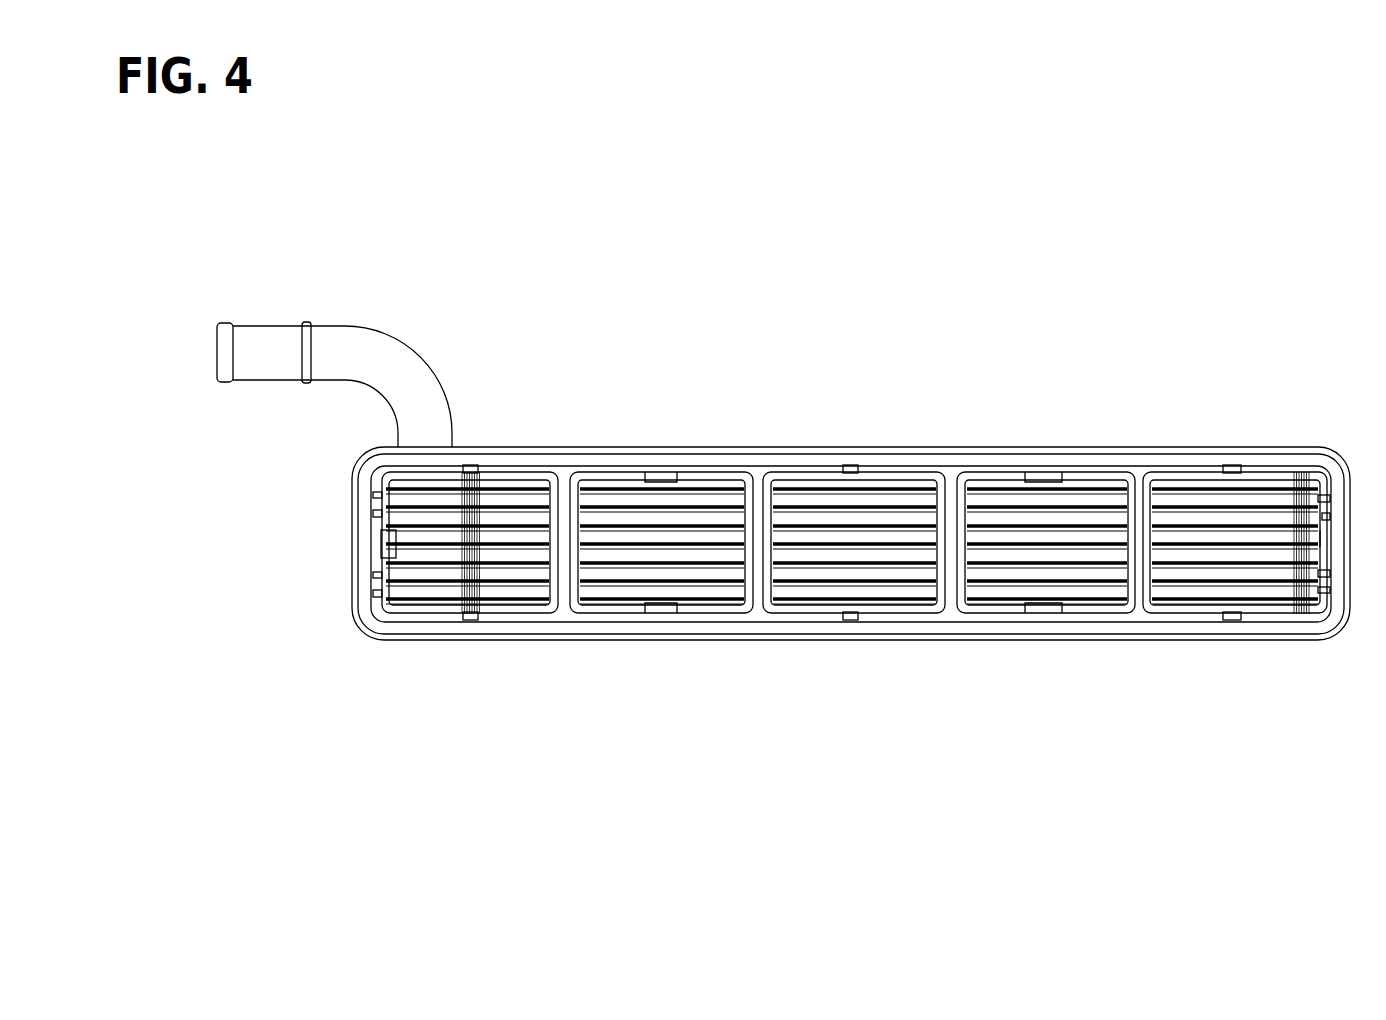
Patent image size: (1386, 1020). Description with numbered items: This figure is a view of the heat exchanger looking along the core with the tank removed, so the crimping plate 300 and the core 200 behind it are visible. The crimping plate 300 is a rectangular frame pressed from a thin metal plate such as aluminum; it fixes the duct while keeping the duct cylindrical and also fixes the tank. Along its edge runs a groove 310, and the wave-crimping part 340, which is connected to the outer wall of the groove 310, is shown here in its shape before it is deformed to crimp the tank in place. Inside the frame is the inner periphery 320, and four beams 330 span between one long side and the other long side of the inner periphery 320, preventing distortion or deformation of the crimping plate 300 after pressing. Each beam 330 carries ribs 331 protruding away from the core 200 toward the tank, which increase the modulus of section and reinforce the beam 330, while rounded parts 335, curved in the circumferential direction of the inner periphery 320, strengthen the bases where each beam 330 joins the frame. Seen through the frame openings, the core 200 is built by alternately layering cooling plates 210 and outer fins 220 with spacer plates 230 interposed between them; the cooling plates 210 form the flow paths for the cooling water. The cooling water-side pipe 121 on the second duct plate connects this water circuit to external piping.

The cooling water-side pipe 121 is at (370, 326).
The core 200 is at (1000, 497).
The cooling plate 210 is at (1080, 492).
The outer fin 220 is at (493, 592).
The spacer plate 230 is at (412, 592).
The crimping plate 300 is at (1193, 460).
The groove 310 is at (805, 458).
The inner periphery 320 is at (693, 470).
The beam 330 is at (833, 612).
The rib 331 is at (575, 598).
The rounded part 335 is at (742, 473).
The wave-crimping part 340 is at (895, 450).